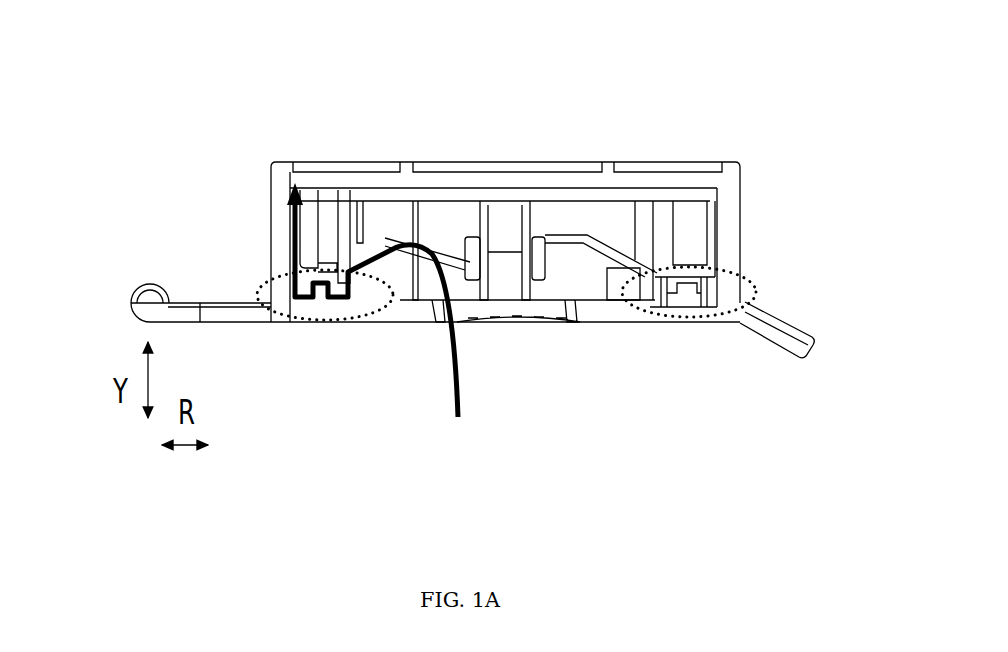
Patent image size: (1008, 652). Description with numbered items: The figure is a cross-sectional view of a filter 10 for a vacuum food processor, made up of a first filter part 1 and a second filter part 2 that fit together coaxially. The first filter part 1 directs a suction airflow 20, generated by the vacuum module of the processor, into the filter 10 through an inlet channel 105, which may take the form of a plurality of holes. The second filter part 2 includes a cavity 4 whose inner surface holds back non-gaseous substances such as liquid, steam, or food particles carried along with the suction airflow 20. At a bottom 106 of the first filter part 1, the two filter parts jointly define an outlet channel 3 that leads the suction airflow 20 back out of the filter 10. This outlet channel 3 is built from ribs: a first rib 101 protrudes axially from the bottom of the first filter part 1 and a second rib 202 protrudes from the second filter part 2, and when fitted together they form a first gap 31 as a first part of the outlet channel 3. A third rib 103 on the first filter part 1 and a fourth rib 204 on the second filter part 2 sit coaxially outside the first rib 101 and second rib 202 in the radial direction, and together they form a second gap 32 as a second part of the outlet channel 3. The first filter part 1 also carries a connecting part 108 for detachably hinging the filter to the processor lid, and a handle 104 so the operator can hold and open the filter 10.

The filter 10 is at (318, 74).
The second filter part 2 is at (564, 138).
The suction airflow 20 is at (722, 248).
The bottom of first filter part 106 is at (452, 265).
The cavity 4 is at (430, 245).
The second rib 202 is at (668, 277).
The fourth rib 204 is at (707, 283).
The outlet channel 3 is at (256, 262).
The handle 104 is at (782, 317).
The connecting part 108 is at (151, 262).
The first filter part 1 is at (309, 357).
The inlet channel 105 is at (510, 342).
The first rib 101 is at (652, 290).
The first gap 31 is at (663, 306).
The second gap 32 is at (702, 306).
The third rib 103 is at (690, 294).